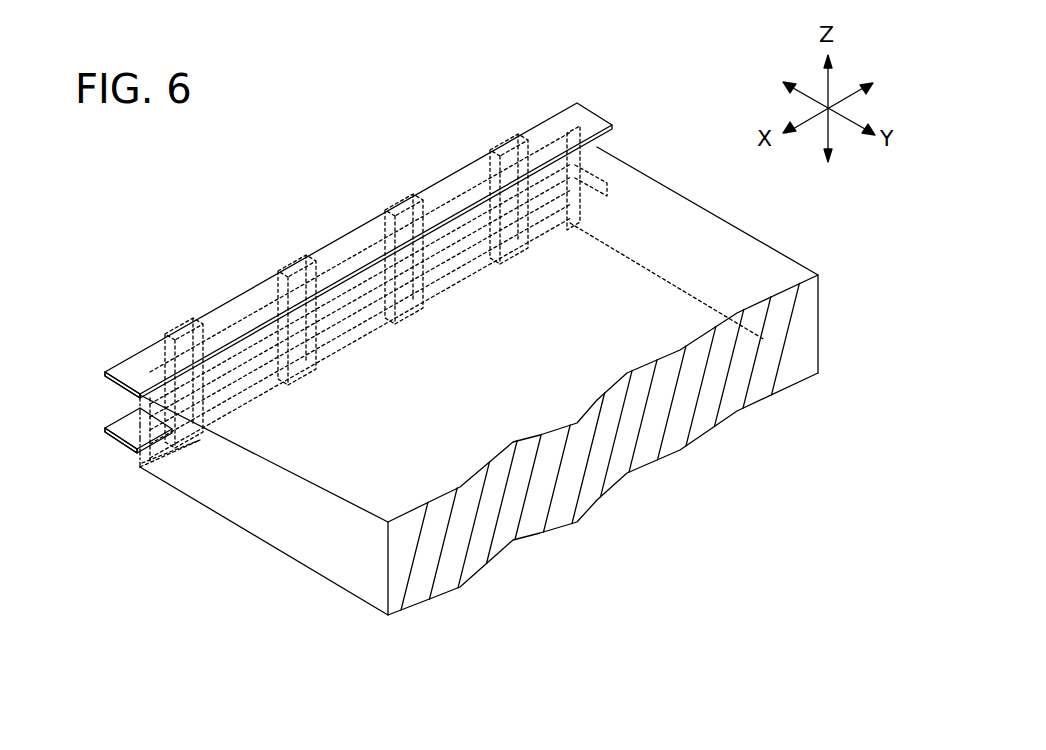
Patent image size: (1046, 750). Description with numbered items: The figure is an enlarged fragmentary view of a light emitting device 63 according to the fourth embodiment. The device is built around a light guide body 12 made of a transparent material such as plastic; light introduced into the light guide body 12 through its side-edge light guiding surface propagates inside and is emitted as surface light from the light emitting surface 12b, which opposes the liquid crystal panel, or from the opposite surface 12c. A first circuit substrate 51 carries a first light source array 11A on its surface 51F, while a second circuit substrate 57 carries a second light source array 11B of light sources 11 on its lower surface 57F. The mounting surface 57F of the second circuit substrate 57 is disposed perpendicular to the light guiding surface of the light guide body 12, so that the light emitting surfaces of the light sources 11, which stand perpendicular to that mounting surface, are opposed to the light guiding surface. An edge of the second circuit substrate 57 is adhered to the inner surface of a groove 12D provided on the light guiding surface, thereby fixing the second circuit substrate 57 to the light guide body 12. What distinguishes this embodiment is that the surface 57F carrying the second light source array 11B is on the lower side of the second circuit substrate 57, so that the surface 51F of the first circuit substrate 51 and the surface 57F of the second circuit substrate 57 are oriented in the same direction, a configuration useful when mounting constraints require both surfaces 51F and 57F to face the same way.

The light emitting device 63 is at (322, 331).
The light sources 11 is at (373, 353).
The first light source array 11A is at (187, 324).
The second light source array 11B is at (202, 452).
The first circuit substrate 51 is at (322, 250).
The surface of the first circuit substrate 51F is at (104, 376).
The second circuit substrate 57 is at (109, 455).
The lower surface of the second circuit substrate 57F is at (108, 448).
The light guide body 12 is at (431, 399).
The light emitting surface 12b is at (692, 223).
The surface opposite the light emitting surface 12c is at (330, 585).
The groove 12D is at (122, 427).